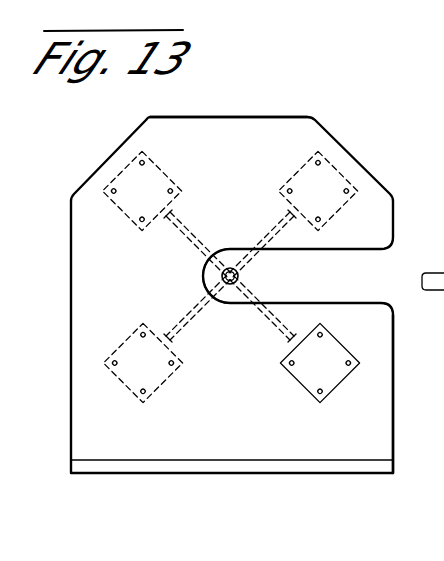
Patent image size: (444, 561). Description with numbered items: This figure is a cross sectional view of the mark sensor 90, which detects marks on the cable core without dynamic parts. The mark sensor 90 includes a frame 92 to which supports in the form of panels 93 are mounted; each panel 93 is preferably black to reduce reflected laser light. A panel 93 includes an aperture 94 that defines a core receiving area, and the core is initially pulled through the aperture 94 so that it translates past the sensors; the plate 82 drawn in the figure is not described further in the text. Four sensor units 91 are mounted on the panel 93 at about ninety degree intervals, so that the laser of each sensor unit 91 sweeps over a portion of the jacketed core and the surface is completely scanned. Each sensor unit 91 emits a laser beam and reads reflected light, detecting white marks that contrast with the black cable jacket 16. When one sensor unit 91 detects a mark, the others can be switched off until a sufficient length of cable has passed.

The cable jacket 16 is at (241, 281).
The mounting plate 82 is at (269, 117).
The mark sensor 90 is at (240, 82).
The sensor unit 91 is at (109, 178).
The frame 92 is at (394, 365).
The panel 93 is at (195, 128).
The aperture 94 is at (443, 264).